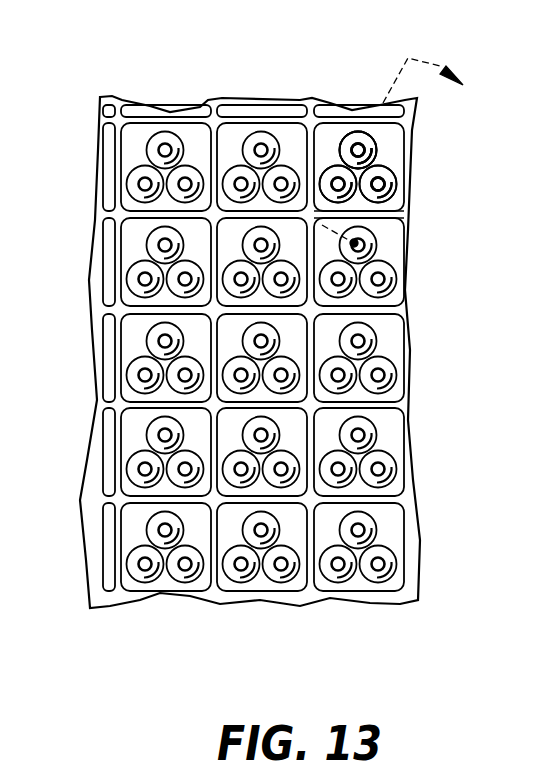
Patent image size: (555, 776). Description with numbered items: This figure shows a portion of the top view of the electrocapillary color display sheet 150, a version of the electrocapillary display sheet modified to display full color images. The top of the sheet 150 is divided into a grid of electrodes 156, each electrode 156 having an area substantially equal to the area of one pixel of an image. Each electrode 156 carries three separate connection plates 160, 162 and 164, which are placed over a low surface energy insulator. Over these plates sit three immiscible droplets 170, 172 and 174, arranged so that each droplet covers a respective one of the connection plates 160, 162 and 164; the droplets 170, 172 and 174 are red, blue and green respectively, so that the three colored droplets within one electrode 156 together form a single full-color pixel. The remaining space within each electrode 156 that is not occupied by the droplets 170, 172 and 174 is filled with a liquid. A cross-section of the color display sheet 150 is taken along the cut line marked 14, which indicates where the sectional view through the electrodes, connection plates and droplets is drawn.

The electrocapillary color display sheet 150 is at (269, 310).
The electrode 156 is at (286, 131).
The connection plate 160 is at (357, 147).
The connection plate 162 is at (379, 184).
The connection plate 164 is at (386, 209).
The droplet 170 is at (330, 176).
The droplet 172 is at (394, 182).
The droplet 174 is at (345, 136).
The section line 14- 14 is at (407, 152).